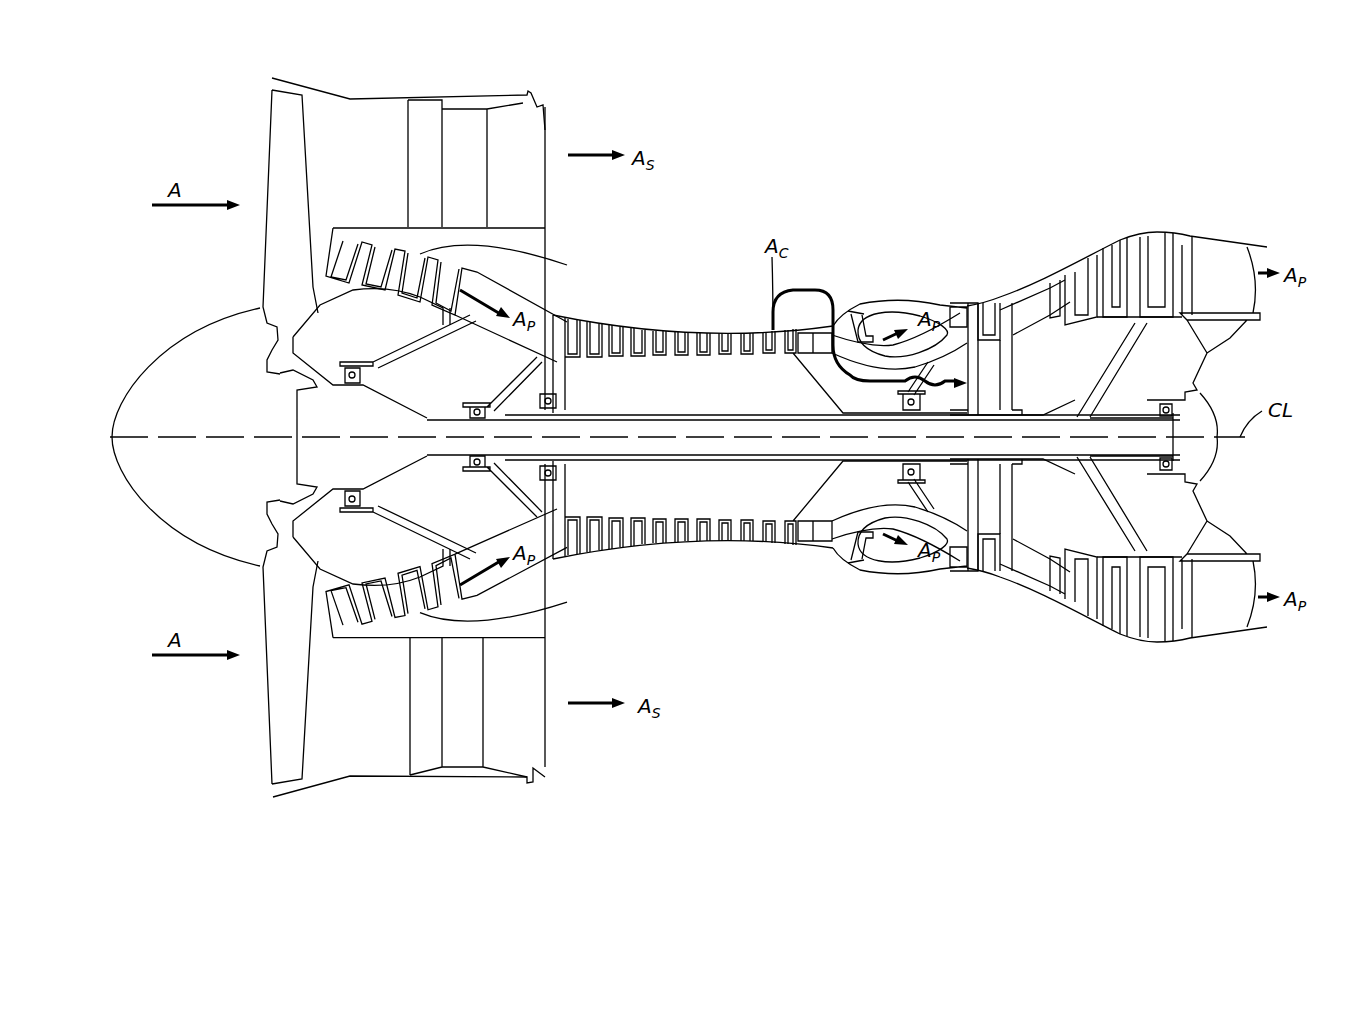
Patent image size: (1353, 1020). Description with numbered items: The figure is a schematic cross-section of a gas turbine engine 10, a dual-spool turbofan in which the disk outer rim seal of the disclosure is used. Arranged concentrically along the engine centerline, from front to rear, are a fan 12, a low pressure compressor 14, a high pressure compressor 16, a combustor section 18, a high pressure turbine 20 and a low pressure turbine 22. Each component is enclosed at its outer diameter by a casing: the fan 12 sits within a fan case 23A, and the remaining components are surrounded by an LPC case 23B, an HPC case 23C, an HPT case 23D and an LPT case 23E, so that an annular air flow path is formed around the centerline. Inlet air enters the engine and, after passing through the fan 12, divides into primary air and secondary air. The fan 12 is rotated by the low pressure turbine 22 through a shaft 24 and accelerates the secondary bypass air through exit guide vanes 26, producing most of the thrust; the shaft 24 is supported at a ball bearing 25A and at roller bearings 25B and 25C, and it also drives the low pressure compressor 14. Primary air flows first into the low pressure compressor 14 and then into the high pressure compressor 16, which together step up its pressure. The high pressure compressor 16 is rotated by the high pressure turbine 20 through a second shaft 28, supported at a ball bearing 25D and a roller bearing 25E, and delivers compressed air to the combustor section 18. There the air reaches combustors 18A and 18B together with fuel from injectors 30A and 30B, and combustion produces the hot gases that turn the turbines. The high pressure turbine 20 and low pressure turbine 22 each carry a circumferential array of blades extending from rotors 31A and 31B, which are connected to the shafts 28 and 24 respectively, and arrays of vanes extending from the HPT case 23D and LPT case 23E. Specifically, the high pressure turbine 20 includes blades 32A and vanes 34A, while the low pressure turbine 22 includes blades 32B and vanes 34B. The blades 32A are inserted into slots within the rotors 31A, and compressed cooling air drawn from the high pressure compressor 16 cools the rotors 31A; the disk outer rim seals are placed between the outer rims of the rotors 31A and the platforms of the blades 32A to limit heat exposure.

The gas turbine engine 10 is at (1043, 157).
The fan 12 is at (268, 706).
The low pressure compressor 14 is at (393, 638).
The high pressure compressor 16 is at (733, 565).
The combustor section 18 is at (893, 582).
The combustor 18A is at (940, 560).
The combustor 18B is at (940, 306).
The high pressure turbine 20 is at (985, 585).
The low pressure turbine 22 is at (1100, 640).
The fan case 23A is at (380, 97).
The LPC case 23B is at (500, 243).
The HPC case 23C is at (703, 337).
The HPT case 23D is at (1027, 582).
The LPT case 23E is at (1165, 234).
The shaft 24 is at (740, 433).
The ball bearing 25A is at (352, 360).
The roller bearing 25B is at (467, 470).
The roller bearing 25C is at (1162, 466).
The ball bearing 25D is at (543, 398).
The roller bearing 25E is at (900, 401).
The exit guide vanes 26 is at (467, 200).
The shaft 28 is at (842, 556).
The injector 30A is at (853, 316).
The injector 30B is at (847, 553).
The rotor 31A is at (983, 373).
The rotor 31B is at (1120, 363).
The blade 32A is at (973, 302).
The blade 32B is at (1100, 262).
The vane 34A is at (990, 302).
The vane 34B is at (1117, 253).